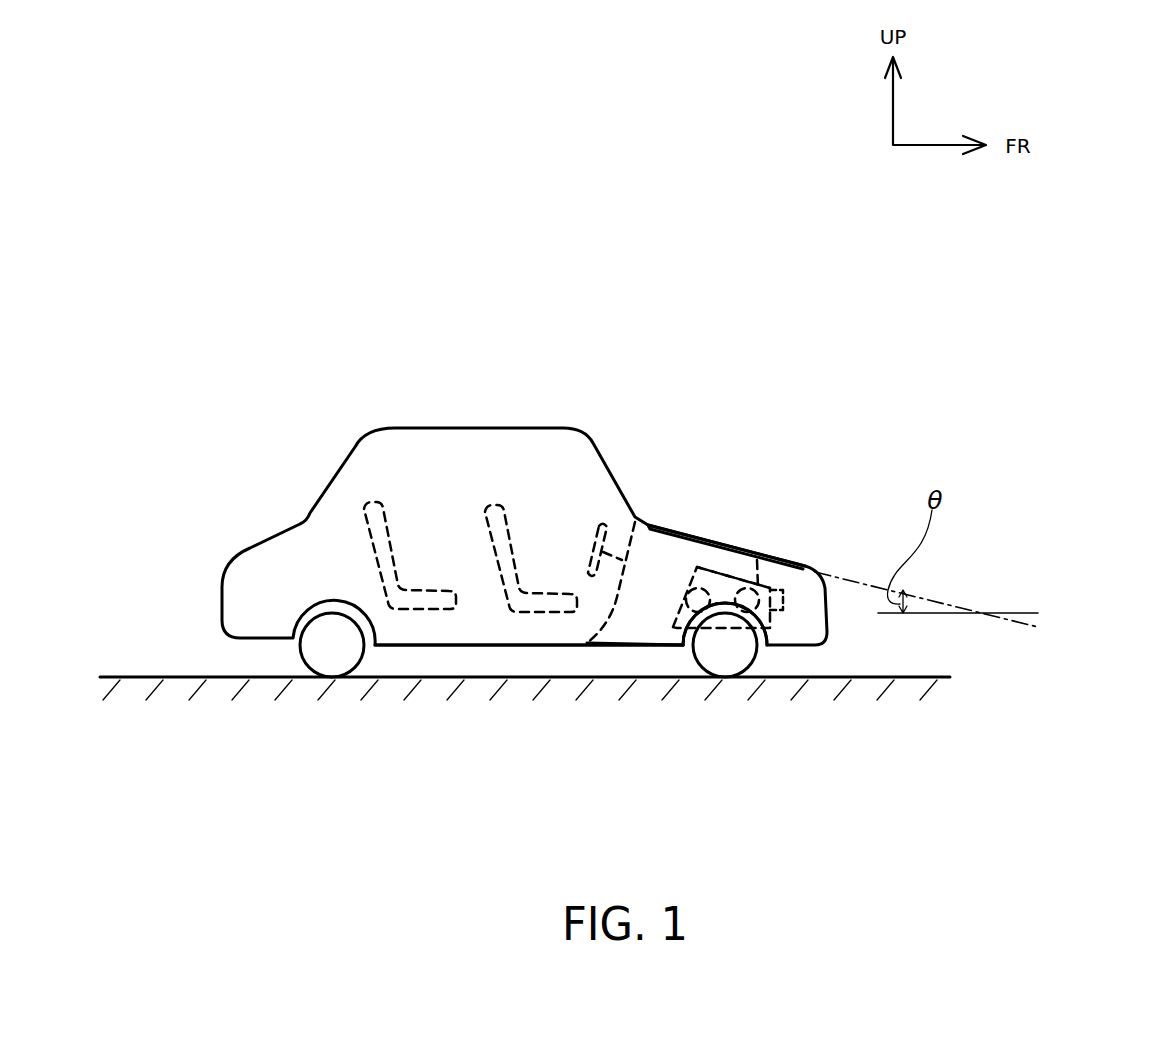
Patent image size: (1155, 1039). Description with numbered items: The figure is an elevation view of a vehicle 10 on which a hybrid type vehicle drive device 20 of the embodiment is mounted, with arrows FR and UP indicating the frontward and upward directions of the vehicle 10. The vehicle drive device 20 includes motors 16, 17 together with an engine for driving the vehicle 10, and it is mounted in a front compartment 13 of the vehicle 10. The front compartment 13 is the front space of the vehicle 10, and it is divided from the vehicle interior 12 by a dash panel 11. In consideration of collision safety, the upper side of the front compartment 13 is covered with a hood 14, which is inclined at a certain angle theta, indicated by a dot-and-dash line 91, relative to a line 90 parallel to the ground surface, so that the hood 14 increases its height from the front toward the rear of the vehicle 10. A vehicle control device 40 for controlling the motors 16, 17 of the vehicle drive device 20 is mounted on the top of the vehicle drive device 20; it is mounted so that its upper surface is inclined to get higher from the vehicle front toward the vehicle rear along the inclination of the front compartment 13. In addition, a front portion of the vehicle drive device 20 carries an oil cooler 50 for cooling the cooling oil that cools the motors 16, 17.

The vehicle 10 is at (485, 427).
The dash panel 11 is at (618, 600).
The vehicle interior 12 is at (467, 623).
The front compartment 13 is at (645, 627).
The hood 14 is at (780, 553).
The motor 16 is at (765, 615).
The motor 17 is at (677, 618).
The vehicle drive device 20 is at (682, 583).
The vehicle control device 40 is at (698, 567).
The oil cooler 50 is at (783, 603).
The line parallel to the ground surface 90 is at (1025, 613).
The dot-and-dash line 91 is at (960, 605).